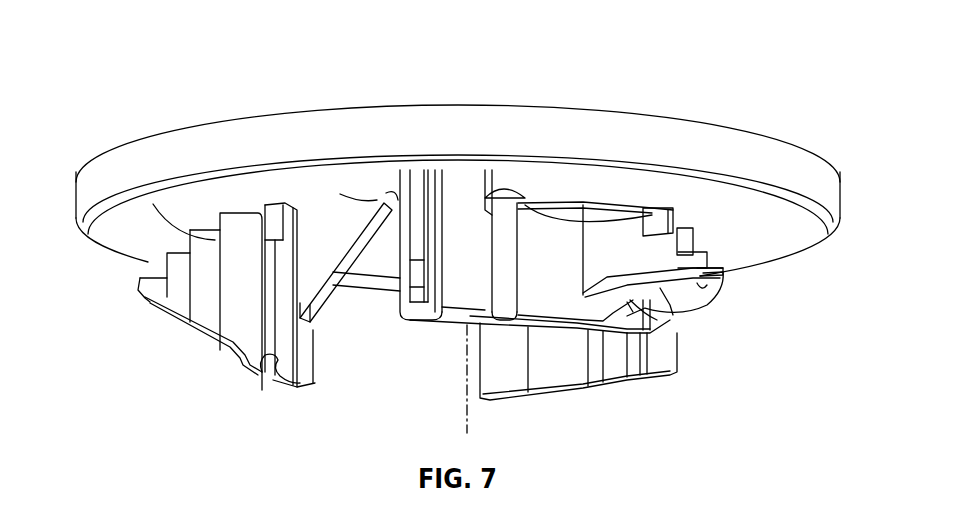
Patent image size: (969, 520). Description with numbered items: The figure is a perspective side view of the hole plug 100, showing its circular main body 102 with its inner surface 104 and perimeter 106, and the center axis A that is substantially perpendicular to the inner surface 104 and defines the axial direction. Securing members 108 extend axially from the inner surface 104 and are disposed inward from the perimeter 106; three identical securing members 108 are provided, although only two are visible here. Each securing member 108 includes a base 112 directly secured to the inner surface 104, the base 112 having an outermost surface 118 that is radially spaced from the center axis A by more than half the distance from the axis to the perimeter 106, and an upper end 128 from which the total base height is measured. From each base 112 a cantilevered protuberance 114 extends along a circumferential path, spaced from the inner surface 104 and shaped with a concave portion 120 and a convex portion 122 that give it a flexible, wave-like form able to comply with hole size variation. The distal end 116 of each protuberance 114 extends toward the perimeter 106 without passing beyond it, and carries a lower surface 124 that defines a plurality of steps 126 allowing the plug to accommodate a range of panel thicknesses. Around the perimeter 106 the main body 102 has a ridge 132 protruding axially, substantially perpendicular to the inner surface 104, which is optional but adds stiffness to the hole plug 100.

The hole plug 100 is at (128, 42).
The main body 102 is at (107, 165).
The inner surface 104 is at (375, 196).
The perimeter 106 is at (840, 227).
The securing member 108 is at (474, 252).
The base 112 is at (303, 357).
The protuberance 114 is at (533, 298).
The distal end 116 is at (145, 298).
The outermost surface 118 is at (436, 207).
The concave portion 120 is at (611, 248).
The convex portion 122 is at (509, 278).
The lower surface 124 is at (152, 265).
The steps 126 is at (178, 240).
The upper end 128 is at (283, 385).
The ridge 132 is at (84, 222).
The center axis A is at (465, 413).